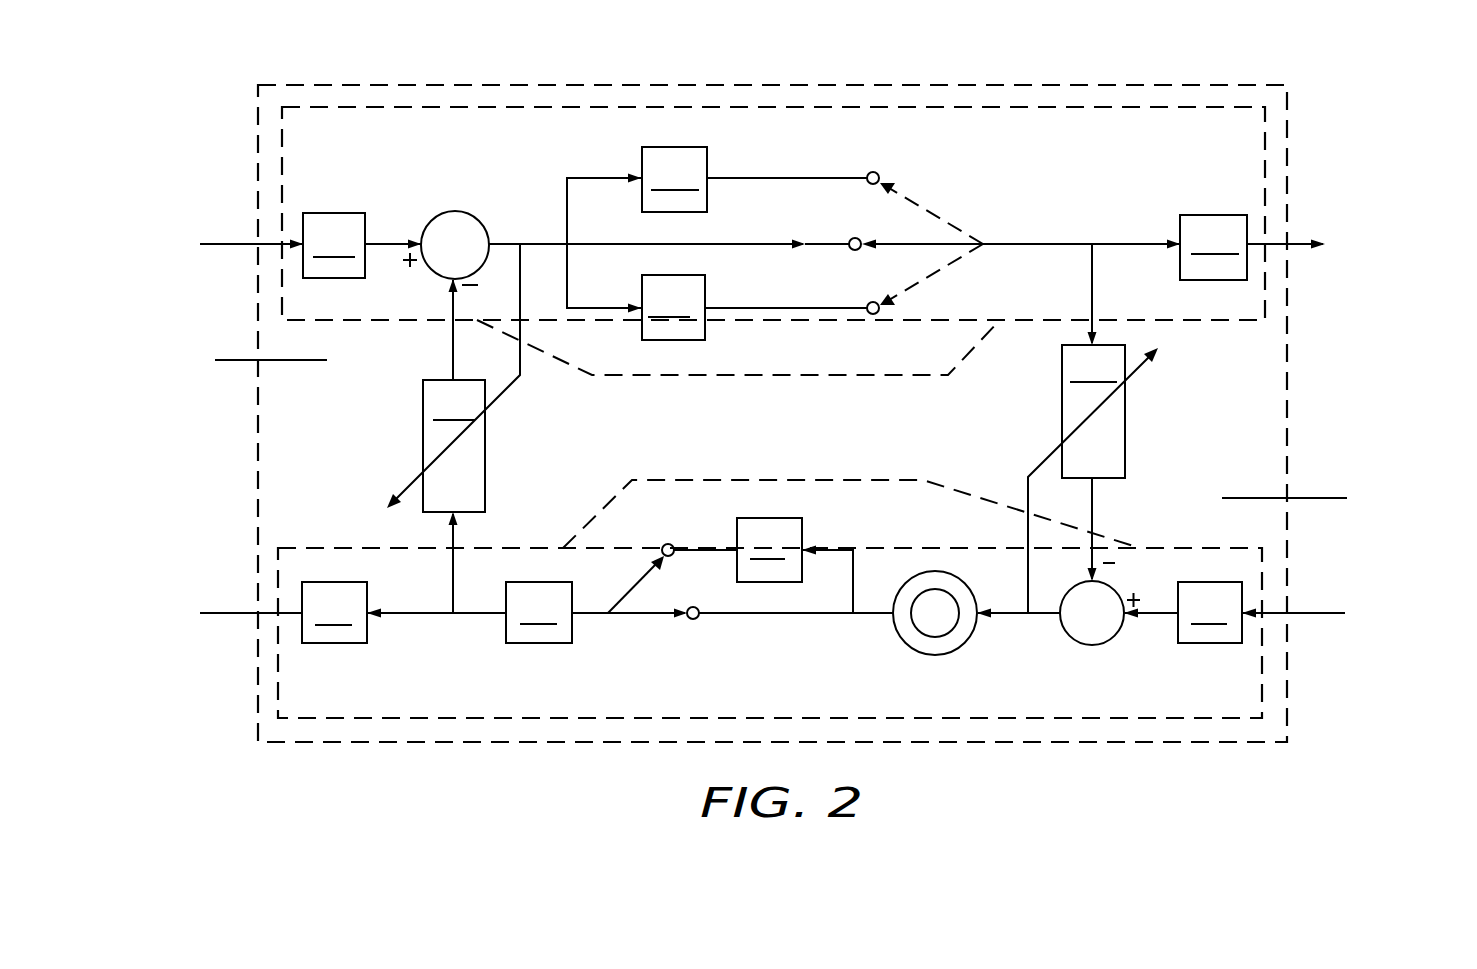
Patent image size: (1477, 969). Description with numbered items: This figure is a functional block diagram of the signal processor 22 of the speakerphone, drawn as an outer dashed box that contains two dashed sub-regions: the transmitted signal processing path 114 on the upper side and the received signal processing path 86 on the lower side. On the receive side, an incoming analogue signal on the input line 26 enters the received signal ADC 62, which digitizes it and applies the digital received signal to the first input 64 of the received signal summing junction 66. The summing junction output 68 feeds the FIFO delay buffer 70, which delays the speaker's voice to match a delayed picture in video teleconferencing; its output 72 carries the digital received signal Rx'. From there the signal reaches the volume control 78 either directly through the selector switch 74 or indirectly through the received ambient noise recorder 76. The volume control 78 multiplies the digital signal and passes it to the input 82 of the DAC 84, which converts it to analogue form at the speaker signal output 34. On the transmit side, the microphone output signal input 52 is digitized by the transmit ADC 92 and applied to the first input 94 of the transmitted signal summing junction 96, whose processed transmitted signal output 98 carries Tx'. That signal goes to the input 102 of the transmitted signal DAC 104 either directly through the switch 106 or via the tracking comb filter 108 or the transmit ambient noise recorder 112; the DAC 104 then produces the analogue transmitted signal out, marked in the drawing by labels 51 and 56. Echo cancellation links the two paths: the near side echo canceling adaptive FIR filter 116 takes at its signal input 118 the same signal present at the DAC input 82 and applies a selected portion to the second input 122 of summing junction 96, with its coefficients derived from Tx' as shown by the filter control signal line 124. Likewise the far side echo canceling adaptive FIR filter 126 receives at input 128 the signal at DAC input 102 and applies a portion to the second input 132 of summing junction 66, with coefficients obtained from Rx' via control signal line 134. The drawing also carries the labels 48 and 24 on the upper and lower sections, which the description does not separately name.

The signal processor 22 is at (808, 85).
The lower signal processing section 24 is at (1306, 498).
The input line 26 is at (1287, 614).
The speaker signal output 34 is at (250, 614).
The upper signal processing section 48 is at (240, 360).
The transmitted signal output line 51 is at (1292, 238).
The microphone output signal input 52 is at (250, 243).
The transmitted signal out 56 is at (1302, 248).
The received signal analog-to-digital converter 62 is at (1206, 628).
The first input of summing junction 64 is at (1124, 624).
The received signal summing junction 66 is at (1092, 646).
The output of summing junction 68 is at (1054, 620).
The FIFO delay buffer 70 is at (942, 574).
The output of delay buffer 72 is at (884, 620).
The selector switch 74 is at (657, 620).
The received ambient noise recorder 76 is at (763, 565).
The volume control 78 is at (544, 640).
The input to digital-to-analog converter 82 is at (371, 619).
The digital-to-analog converter 84 is at (334, 628).
The received signal processing path 86 is at (757, 478).
The transmit ADC 92 is at (329, 232).
The first input of transmitted signal summing junction 94 is at (424, 234).
The transmitted signal summing junction 96 is at (452, 211).
The processed transmitted signal output 98 is at (492, 232).
The input of transmitted signal DAC 102 is at (1176, 240).
The transmitted signal DAC 104 is at (1212, 234).
The switch 106 is at (930, 250).
The tracking comb filter 108 is at (721, 195).
The transmit ambient noise recorder 112 is at (717, 292).
The transmitted signal processing path 114 is at (657, 375).
The near side echo canceling adaptive FIR digital filter 116 is at (385, 446).
The signal input of near side echo canceling filter 118 is at (462, 514).
The second input of transmitted summing junction 122 is at (450, 282).
The filter control signal line 124 is at (502, 402).
The far side echo canceling adaptive FIR digital filter 126 is at (1160, 411).
The signal input of far side echo canceling filter 128 is at (1085, 341).
The second input of received signal summing junction 132 is at (1070, 588).
The control signal line 134 is at (1043, 458).